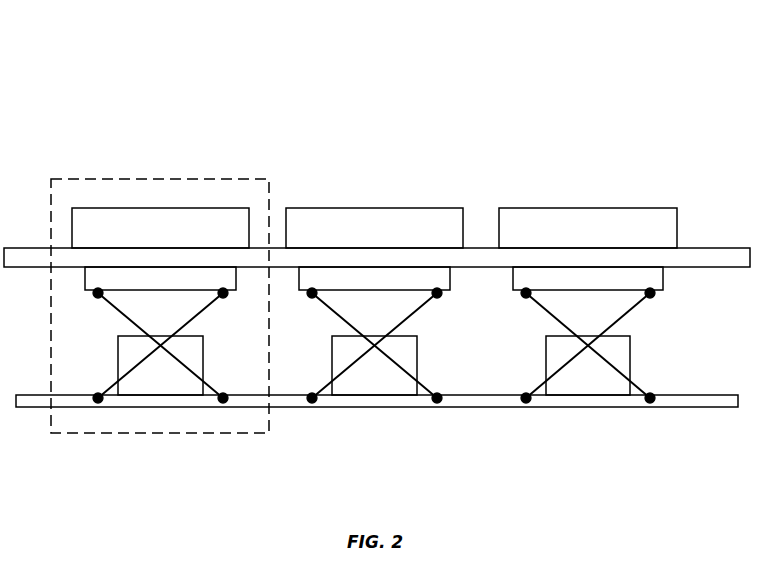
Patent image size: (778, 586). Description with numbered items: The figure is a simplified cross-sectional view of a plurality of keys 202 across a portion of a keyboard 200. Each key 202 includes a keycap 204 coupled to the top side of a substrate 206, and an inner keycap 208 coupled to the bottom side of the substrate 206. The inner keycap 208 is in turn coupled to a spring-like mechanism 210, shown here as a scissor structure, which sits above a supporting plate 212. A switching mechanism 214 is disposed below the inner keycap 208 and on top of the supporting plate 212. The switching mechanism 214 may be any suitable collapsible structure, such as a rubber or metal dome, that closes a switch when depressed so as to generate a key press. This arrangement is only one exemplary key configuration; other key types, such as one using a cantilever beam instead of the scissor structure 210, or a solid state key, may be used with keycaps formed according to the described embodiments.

The keyboard 200 is at (533, 72).
The key 202 is at (153, 179).
The keycap 204 is at (357, 213).
The substrate 206 is at (705, 255).
The inner keycap 208 is at (650, 275).
The spring-like mechanism 210 is at (543, 309).
The supporting plate 212 is at (685, 400).
The switching mechanism 214 is at (583, 378).